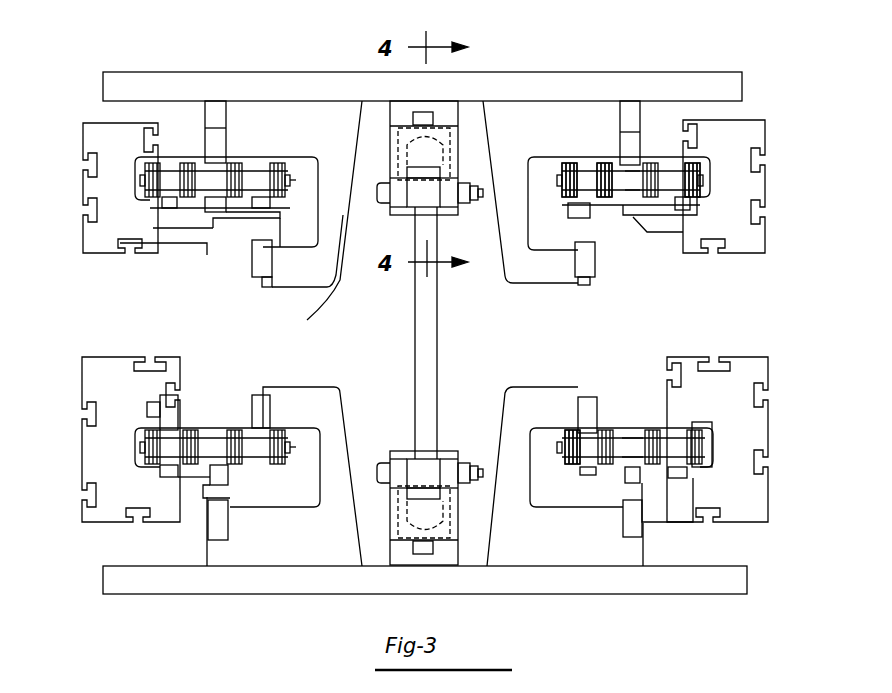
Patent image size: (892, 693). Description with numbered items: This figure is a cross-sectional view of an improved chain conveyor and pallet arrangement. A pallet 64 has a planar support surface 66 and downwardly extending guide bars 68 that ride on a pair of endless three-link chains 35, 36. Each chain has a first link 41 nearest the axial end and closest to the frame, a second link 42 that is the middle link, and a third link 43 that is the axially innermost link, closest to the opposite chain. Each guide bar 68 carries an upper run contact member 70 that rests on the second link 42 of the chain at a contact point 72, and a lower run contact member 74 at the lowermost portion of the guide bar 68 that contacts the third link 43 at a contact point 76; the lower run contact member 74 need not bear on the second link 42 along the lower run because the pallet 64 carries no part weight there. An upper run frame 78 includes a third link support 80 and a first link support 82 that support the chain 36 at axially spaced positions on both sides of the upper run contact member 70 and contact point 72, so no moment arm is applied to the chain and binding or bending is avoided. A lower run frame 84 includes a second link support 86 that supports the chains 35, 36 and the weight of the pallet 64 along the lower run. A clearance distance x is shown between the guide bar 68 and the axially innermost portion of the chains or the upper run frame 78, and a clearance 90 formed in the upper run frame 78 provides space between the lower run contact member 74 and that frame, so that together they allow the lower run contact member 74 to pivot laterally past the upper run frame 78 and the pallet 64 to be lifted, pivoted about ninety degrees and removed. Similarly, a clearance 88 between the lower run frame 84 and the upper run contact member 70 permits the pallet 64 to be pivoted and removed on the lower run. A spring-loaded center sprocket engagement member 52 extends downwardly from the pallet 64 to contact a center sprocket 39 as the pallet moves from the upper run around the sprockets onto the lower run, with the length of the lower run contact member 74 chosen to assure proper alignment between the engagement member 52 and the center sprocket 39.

The endless three-link chain 35 is at (138, 188).
The endless three-link chain 36 is at (700, 180).
The center sprocket 39 is at (437, 376).
The first link 41 is at (678, 190).
The second link 42 is at (630, 185).
The third link 43 is at (588, 188).
The center sprocket engagement member 52 is at (402, 212).
The pallet 64 is at (343, 58).
The planar support surface 66 is at (632, 72).
The downwardly extending guide bar 68 is at (522, 134).
The upper run contact member 70 is at (220, 137).
The contact point 72 is at (620, 172).
The lower run contact member 74 is at (252, 267).
The contact point 76 is at (592, 460).
The upper run frame 78 is at (78, 138).
The third link support 80 is at (586, 205).
The first link support 82 is at (680, 205).
The lower run frame 84 is at (107, 482).
The second link support 86 is at (630, 488).
The clearance 88 is at (643, 488).
The clearance 90 is at (215, 248).